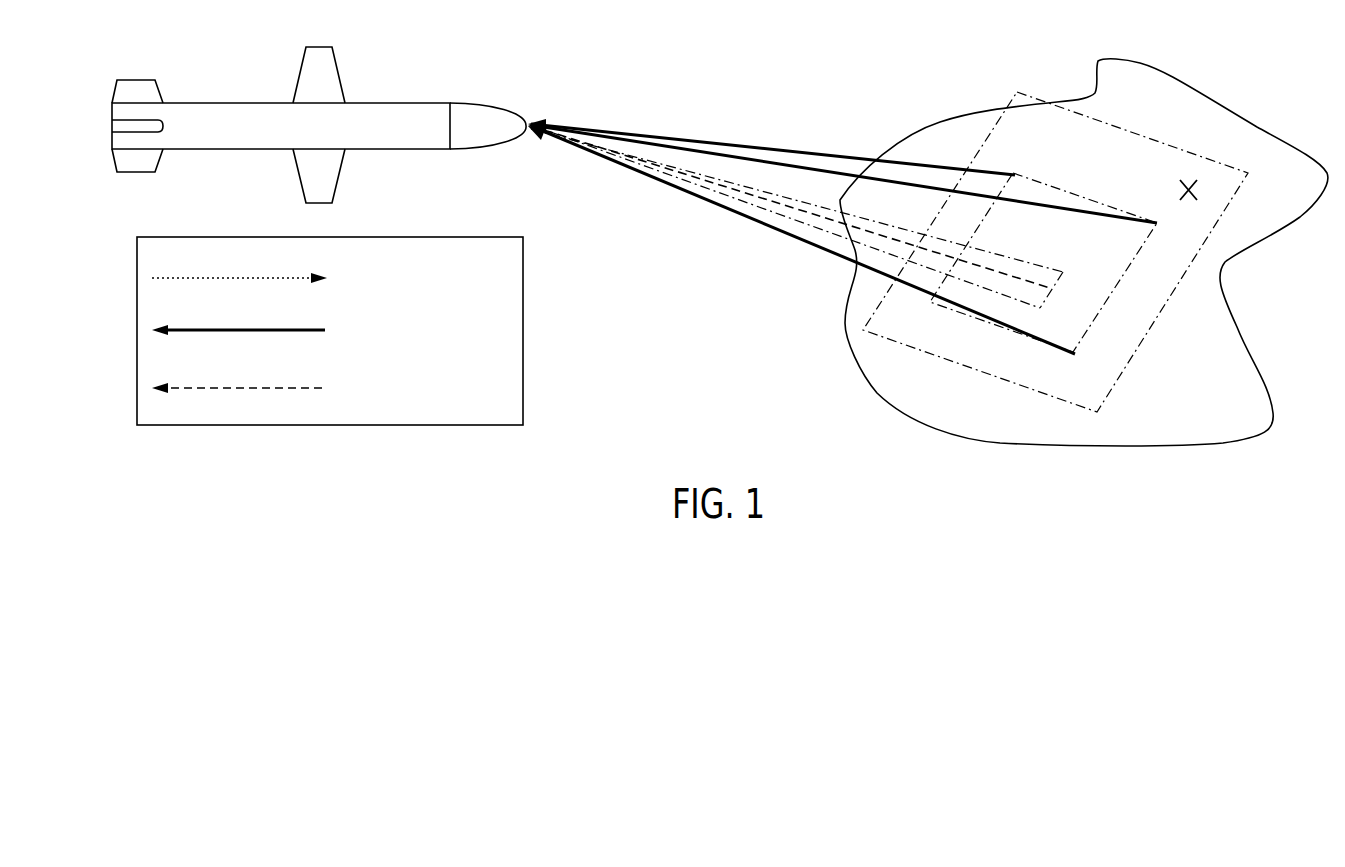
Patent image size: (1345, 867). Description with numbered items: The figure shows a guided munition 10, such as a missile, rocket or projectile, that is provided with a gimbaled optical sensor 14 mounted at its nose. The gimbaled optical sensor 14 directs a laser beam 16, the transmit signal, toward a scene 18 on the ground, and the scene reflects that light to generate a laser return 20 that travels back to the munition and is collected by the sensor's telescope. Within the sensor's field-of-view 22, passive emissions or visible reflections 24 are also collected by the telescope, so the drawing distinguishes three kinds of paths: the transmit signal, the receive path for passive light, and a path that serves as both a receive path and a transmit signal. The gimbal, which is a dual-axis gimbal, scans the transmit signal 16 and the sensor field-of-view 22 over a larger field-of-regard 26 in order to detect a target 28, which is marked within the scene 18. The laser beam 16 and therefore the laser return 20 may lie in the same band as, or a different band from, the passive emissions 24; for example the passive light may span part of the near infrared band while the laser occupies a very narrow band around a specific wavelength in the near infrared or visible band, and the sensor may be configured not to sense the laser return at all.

The guided munition 10 is at (253, 100).
The gimbaled optical sensor 14 is at (490, 103).
The laser beam 16 is at (1005, 257).
The scene 18 is at (1089, 166).
The laser return 20 is at (823, 220).
The field-of-view 22 is at (1085, 198).
The passive emissions or visible reflections 24 is at (788, 150).
The field-of-regard 26 is at (1142, 343).
The target 28 is at (1200, 186).